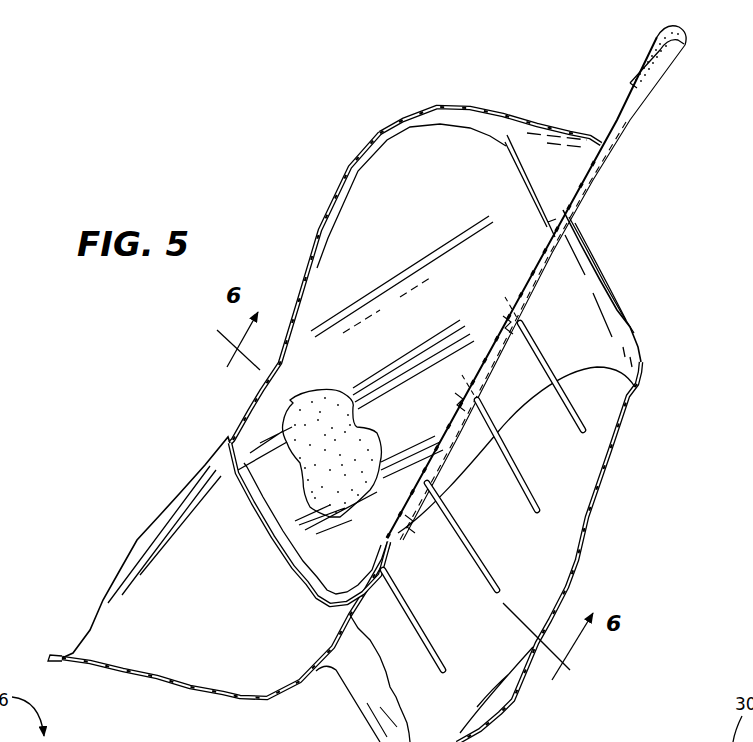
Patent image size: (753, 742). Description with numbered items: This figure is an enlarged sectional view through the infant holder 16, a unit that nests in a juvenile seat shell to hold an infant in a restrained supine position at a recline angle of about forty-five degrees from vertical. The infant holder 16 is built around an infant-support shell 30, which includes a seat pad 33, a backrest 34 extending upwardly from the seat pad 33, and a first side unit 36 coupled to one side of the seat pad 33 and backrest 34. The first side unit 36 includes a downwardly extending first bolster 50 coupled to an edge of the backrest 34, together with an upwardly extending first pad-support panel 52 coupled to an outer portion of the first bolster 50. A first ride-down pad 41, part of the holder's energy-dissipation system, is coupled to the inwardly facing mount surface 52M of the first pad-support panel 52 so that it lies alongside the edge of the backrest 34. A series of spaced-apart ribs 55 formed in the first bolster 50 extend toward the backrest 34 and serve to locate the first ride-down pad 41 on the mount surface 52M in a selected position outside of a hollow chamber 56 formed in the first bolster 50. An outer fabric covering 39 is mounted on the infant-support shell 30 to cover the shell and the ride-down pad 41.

The infant holder 16 is at (321, 150).
The infant-support shell 30 is at (533, 110).
The seat pad 33 is at (163, 676).
The backrest 34 is at (592, 183).
The first side unit 36 is at (306, 240).
The outer fabric covering 39 is at (643, 53).
The first ride-down pad 41 is at (320, 410).
The first bolster 50 is at (634, 321).
The first pad-support panel 52 is at (229, 421).
The mount surface 52M is at (236, 517).
The ribs 55 is at (508, 472).
The hollow chamber 56 is at (571, 476).